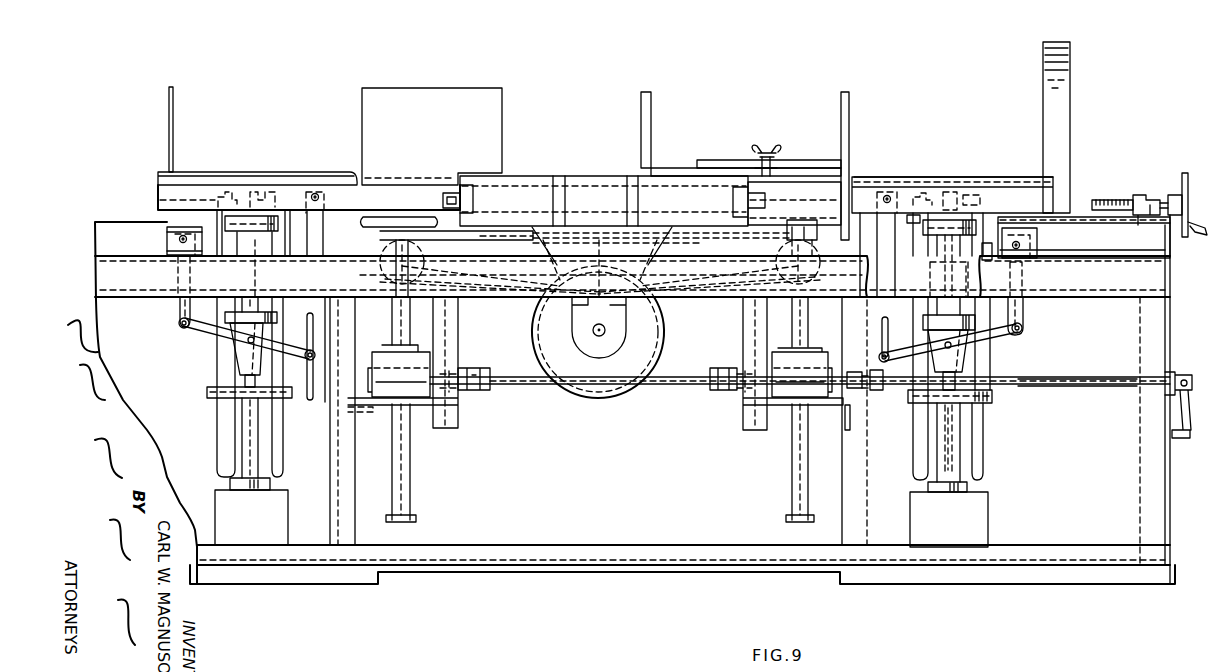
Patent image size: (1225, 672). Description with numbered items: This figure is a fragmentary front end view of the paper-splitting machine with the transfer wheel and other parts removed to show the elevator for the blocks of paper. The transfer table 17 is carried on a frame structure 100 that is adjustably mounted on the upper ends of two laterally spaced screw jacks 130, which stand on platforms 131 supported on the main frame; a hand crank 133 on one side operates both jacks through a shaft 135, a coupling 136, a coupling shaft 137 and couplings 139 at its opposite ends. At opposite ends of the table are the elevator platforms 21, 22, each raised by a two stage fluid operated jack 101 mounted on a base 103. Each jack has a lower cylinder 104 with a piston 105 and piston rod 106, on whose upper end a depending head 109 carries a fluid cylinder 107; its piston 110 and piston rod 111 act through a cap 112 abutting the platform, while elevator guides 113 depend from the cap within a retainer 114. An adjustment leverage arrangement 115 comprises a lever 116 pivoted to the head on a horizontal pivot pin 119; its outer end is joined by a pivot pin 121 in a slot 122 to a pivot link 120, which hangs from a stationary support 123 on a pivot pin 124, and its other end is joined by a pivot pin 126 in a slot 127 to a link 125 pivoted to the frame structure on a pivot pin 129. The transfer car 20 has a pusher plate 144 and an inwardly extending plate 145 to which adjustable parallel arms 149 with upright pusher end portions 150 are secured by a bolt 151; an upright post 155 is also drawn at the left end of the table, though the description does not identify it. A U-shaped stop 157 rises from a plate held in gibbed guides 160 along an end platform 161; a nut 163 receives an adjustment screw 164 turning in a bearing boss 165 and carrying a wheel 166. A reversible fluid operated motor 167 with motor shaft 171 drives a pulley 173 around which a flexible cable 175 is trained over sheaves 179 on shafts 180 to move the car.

The transfer table 17 is at (604, 178).
The transfer car 20 is at (749, 156).
The elevator platform 21 is at (890, 178).
The elevator platform 22 is at (305, 175).
The frame structure 100 is at (172, 198).
The two stage fluid operated jack 101 is at (245, 431).
The base 103 is at (225, 519).
The lower cylinder 104 is at (264, 468).
The piston 105 is at (975, 427).
The piston rod 106 is at (256, 378).
The fluid cylinder 107 is at (263, 298).
The depending head 109 is at (242, 362).
The piston 110 is at (935, 284).
The piston rod 111 is at (258, 190).
The cap 112 is at (236, 190).
The elevator guides 113 is at (278, 437).
The retainer 114 is at (210, 393).
The adjustment leverage arrangement 115 is at (178, 338).
The lever 116 is at (201, 336).
The horizontal pivot pin 119 is at (248, 333).
The pivot link 120 is at (178, 303).
The pivot pin 121 is at (1022, 331).
The slot 122 is at (182, 323).
The support 123 is at (167, 245).
The pivot pin 124 is at (182, 234).
The link 125 is at (322, 304).
The pivot pin 126 is at (312, 355).
The slot 127 is at (313, 398).
The pivot pin 129 is at (316, 195).
The screw jack 130 is at (418, 473).
The platform 131 is at (380, 410).
The hand crank 133 is at (1190, 425).
The shaft 135 is at (1100, 380).
The coupling 136 is at (858, 430).
The coupling shaft 137 is at (660, 390).
The coupling 139 is at (478, 368).
The pusher plate 144 is at (848, 95).
The inwardly extending plate 145 is at (708, 155).
The parallel arms 149 is at (720, 172).
The upright pusher end portion 150 is at (642, 115).
The bolt 151 is at (775, 152).
The post 155 is at (173, 130).
The U-shaped stop 157 is at (1070, 75).
The gibbed guides 160 is at (1108, 228).
The end platform 161 is at (1132, 228).
The nut 163 is at (1138, 200).
The adjustment screw 164 is at (1106, 198).
The bearing boss 165 is at (1165, 193).
The wheel 166 is at (1186, 222).
The reversible fluid operated motor 167 is at (620, 340).
The motor shaft 171 is at (599, 337).
The pulley 173 is at (651, 316).
The flexible cable 175 is at (485, 242).
The sheaves 179 is at (414, 256).
The shafts 180 is at (385, 278).